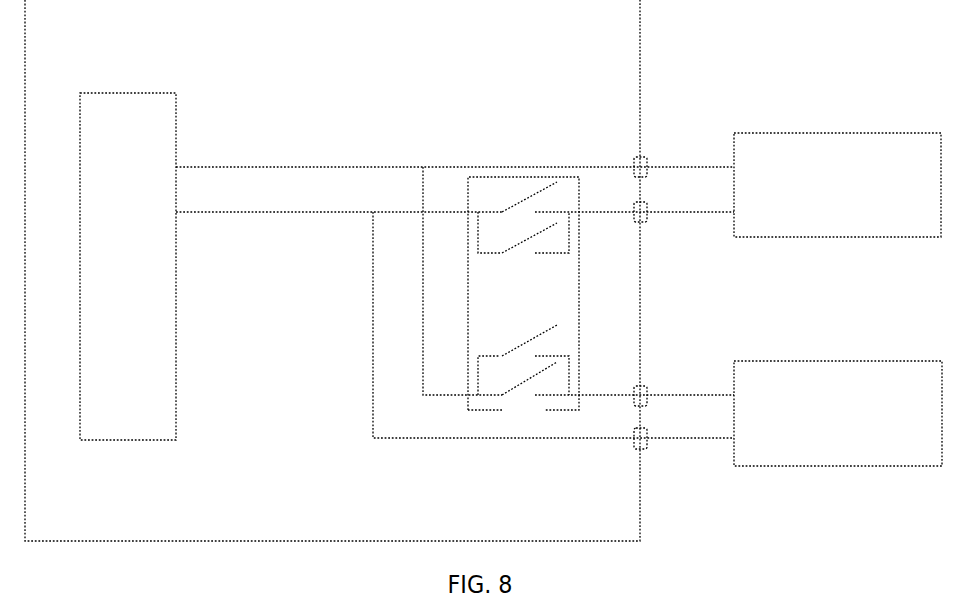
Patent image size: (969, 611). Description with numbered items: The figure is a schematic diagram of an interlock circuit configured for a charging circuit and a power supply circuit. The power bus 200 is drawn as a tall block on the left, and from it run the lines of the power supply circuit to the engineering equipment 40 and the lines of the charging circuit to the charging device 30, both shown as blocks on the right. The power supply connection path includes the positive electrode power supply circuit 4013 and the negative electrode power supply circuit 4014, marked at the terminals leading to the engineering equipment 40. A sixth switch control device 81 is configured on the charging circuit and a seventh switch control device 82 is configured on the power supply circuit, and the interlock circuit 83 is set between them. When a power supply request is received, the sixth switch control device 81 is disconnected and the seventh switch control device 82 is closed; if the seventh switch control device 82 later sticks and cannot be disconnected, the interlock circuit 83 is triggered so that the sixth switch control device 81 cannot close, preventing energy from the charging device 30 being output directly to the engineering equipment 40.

The power bus 200 is at (128, 266).
The engineering equipment 40 is at (837, 185).
The charging device 30 is at (838, 413).
The negative electrode power supply circuit 4014 is at (678, 165).
The positive electrode power supply circuit 4013 is at (678, 212).
The interlock circuit 83 is at (537, 412).
The sixth switch control device 81 is at (530, 240).
The seventh switch control device 82 is at (519, 197).